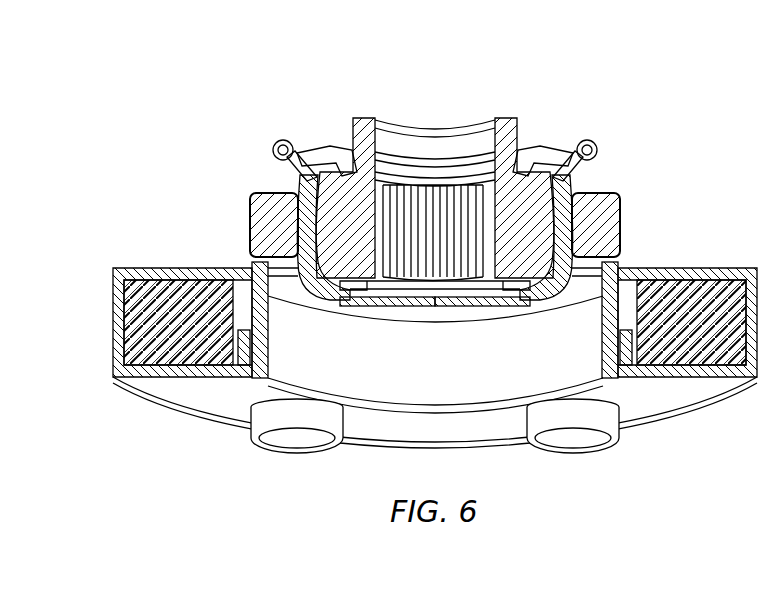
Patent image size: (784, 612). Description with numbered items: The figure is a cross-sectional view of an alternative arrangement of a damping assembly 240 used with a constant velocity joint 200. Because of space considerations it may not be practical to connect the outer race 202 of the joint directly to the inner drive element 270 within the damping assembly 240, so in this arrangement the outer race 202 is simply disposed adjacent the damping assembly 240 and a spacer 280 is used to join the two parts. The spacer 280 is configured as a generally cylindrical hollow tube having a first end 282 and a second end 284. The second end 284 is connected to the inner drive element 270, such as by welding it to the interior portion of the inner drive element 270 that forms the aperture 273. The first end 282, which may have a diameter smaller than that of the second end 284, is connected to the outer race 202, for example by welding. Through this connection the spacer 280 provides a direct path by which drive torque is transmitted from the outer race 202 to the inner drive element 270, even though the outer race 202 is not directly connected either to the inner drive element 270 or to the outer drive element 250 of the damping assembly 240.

The constant velocity joint 200 is at (395, 304).
The outer race 202 is at (606, 229).
The damping assembly 240 is at (105, 361).
The outer drive element 250 is at (713, 268).
The inner drive element 270 is at (170, 386).
The aperture 273 is at (392, 398).
The spacer 280 is at (247, 364).
The first end 282 is at (254, 267).
The second end 284 is at (586, 356).